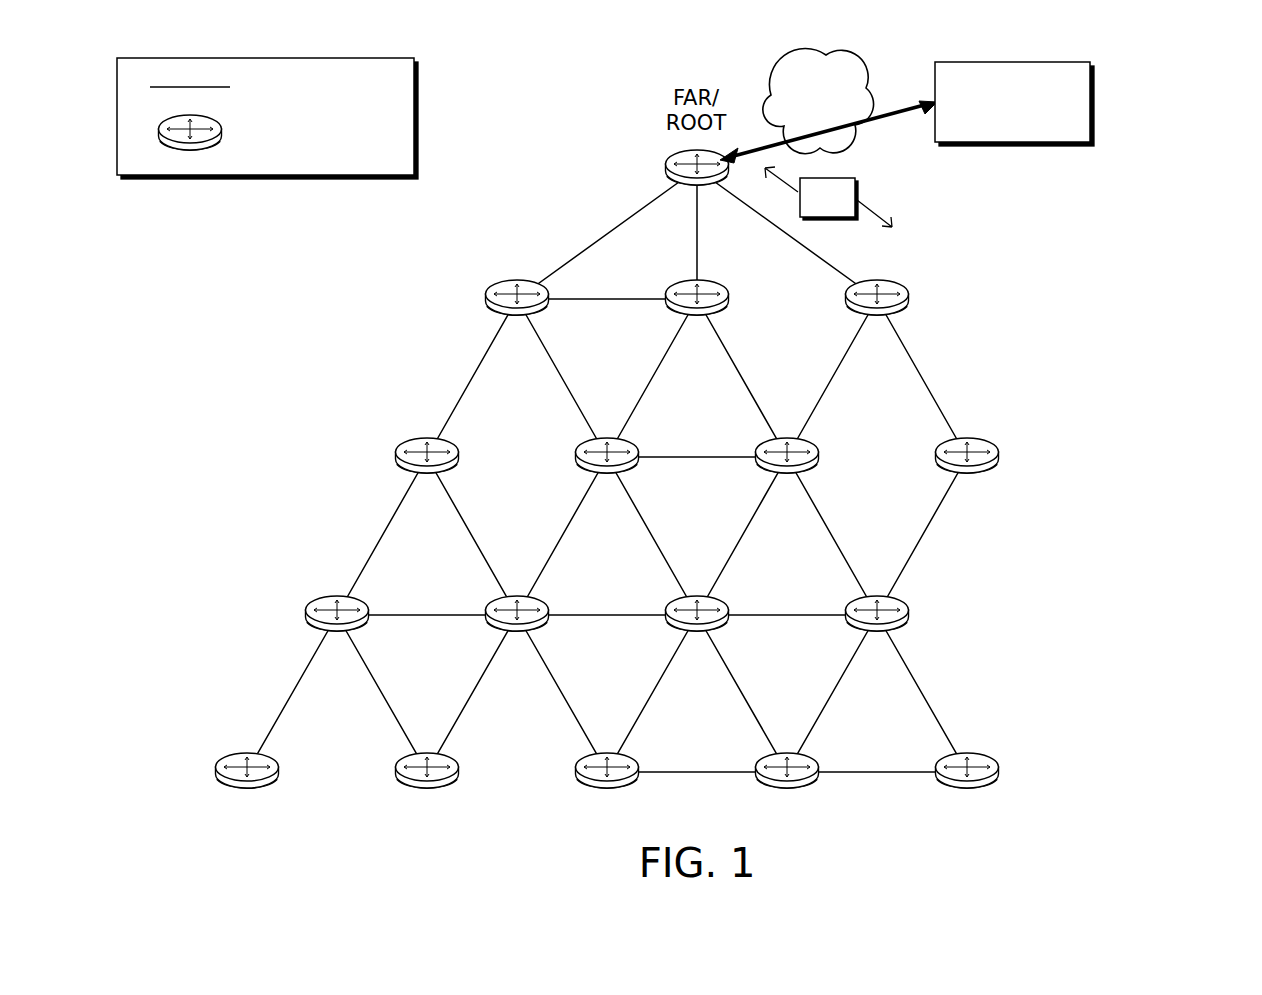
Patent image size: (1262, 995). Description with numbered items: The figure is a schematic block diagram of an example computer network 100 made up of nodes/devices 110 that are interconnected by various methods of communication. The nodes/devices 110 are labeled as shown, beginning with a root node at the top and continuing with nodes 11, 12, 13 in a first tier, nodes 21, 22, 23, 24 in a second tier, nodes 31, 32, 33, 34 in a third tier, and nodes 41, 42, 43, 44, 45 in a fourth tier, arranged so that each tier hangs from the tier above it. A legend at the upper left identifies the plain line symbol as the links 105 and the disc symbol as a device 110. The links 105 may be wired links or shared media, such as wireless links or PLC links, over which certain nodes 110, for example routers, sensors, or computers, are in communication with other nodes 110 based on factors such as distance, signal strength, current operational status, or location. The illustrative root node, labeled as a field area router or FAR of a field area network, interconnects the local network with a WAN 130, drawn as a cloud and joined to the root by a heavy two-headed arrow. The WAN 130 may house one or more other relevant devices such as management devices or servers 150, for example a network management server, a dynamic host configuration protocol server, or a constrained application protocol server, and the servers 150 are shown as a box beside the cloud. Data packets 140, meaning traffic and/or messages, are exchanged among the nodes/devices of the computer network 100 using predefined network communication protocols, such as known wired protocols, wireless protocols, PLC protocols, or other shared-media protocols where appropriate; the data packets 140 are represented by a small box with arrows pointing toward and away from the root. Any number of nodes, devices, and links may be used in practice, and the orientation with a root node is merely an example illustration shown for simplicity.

The computer network 100 is at (1185, 109).
The links 105 is at (150, 87).
The nodes/devices 110 is at (270, 132).
The WAN 130 is at (803, 117).
The data packets 140 is at (811, 208).
The servers 150 is at (995, 125).
The node 11 is at (517, 317).
The node 12 is at (697, 317).
The node 13 is at (877, 317).
The node 21 is at (427, 475).
The node 22 is at (607, 475).
The node 23 is at (787, 475).
The node 24 is at (967, 475).
The node 31 is at (337, 633).
The node 32 is at (517, 633).
The node 33 is at (697, 633).
The node 34 is at (877, 633).
The node 41 is at (247, 790).
The node 42 is at (427, 790).
The node 43 is at (607, 790).
The node 44 is at (787, 790).
The node 45 is at (967, 790).